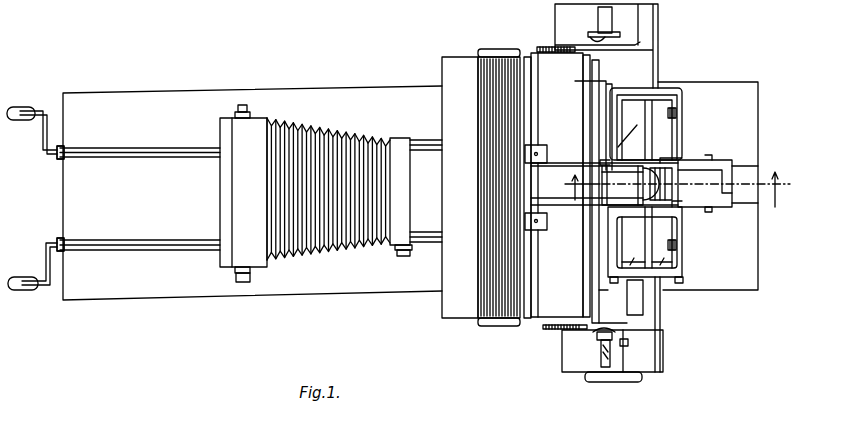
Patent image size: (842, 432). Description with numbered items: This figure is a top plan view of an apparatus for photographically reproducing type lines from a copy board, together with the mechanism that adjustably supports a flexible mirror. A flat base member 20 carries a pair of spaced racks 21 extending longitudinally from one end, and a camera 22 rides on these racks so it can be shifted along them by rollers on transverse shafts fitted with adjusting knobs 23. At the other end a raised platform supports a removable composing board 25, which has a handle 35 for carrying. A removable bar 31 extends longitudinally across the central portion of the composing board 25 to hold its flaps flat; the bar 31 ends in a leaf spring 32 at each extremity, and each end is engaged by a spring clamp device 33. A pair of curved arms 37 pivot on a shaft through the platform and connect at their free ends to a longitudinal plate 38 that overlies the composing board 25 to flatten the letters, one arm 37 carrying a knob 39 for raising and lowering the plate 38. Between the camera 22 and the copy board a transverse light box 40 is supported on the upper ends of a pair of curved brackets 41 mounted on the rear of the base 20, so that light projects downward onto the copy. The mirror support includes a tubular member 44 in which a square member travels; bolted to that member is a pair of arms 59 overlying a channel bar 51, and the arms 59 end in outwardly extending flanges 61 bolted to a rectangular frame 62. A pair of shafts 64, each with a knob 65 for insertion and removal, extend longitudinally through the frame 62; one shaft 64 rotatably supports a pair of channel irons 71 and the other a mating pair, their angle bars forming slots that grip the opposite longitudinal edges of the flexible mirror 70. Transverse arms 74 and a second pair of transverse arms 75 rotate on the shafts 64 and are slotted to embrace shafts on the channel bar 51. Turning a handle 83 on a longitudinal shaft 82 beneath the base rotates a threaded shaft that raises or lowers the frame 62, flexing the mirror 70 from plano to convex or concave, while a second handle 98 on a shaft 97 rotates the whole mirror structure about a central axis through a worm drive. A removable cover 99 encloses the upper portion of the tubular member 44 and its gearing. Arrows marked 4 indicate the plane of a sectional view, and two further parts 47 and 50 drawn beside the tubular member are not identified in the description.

The section line 4- 4 is at (670, 177).
The flat base member 20 is at (342, 100).
The spaced racks 21 is at (168, 146).
The camera 22 is at (243, 192).
The adjusting knobs 23 is at (244, 105).
The removable composing board 25 is at (580, 365).
The removable bar 31 is at (622, 301).
The leaf spring 32 is at (630, 342).
The spring clamp device 33 is at (588, 28).
The handle 35 is at (614, 382).
The curved arms 37 is at (546, 47).
The longitudinal plate 38 is at (648, 25).
The knob 39 is at (597, 340).
The transverse light box 40 is at (455, 65).
The curved brackets 41 is at (660, 184).
The tubular member 44 is at (666, 178).
The bracket 47 is at (708, 157).
The bearings 50 is at (660, 158).
The channel bar 51 is at (662, 240).
The arms 59 is at (622, 185).
The outwardly extending flanges 61 is at (602, 158).
The rectangular frame 62 is at (663, 88).
The shafts 64 is at (709, 233).
The knob 65 is at (608, 290).
The flexible mirror 70 is at (632, 241).
The channel irons 71 is at (678, 118).
The transverse arms 74 is at (632, 253).
The second pair of transverse arms 75 is at (661, 254).
The shaft 82 is at (62, 148).
The handle 83 is at (42, 110).
The shaft 97 is at (55, 243).
The handle 98 is at (42, 290).
The removable cover 99 is at (722, 165).